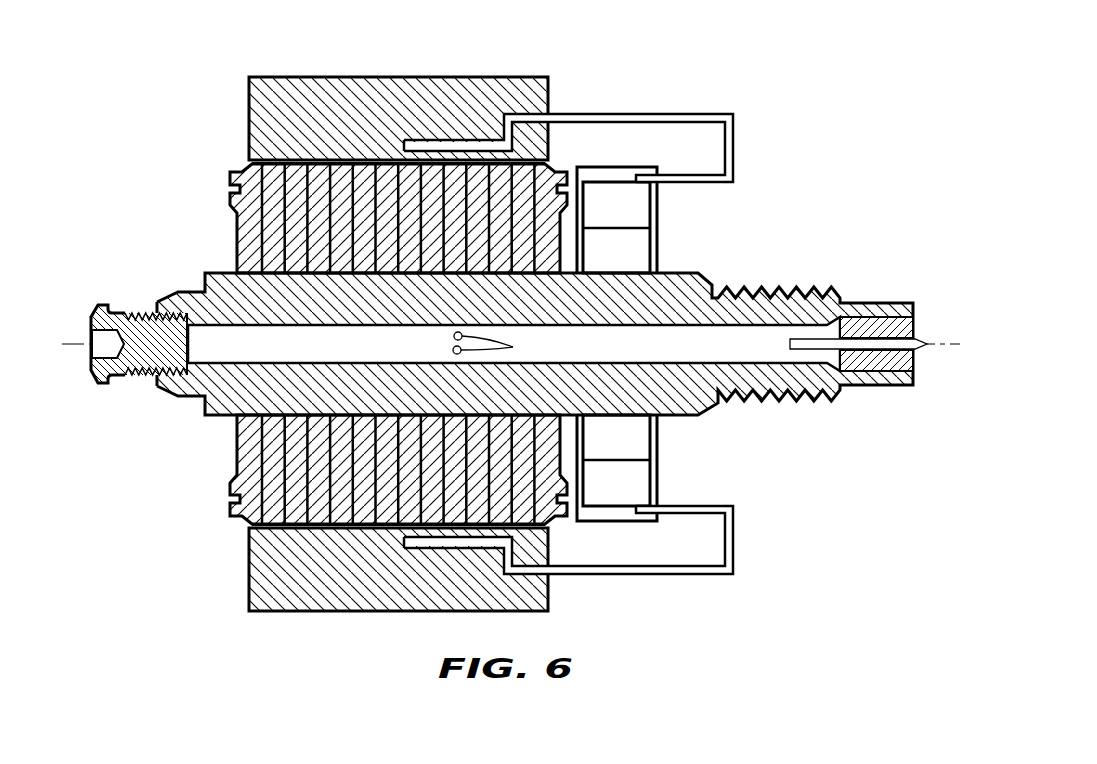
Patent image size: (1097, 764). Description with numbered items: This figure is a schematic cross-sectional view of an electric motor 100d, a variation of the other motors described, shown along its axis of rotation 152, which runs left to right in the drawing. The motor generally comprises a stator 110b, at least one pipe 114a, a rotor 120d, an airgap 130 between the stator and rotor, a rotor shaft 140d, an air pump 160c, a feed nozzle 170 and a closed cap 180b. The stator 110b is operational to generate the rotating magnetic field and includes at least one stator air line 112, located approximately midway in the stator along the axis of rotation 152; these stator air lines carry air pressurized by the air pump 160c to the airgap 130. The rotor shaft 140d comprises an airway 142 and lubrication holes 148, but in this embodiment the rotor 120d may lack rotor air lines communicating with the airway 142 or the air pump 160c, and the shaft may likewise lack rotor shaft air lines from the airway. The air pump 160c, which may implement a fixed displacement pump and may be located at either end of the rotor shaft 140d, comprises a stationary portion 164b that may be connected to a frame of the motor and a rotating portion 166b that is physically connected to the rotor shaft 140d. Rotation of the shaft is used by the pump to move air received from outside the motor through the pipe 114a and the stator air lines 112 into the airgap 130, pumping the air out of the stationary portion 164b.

The electric motor 100d is at (189, 70).
The stator 110b is at (245, 124).
The stator air line 112 is at (452, 138).
The pipe 114a is at (669, 113).
The rotor 120d is at (237, 238).
The airgap 130 is at (241, 160).
The rotor shaft 140d is at (676, 272).
The airway 142 is at (278, 360).
The lubrication holes 148 is at (506, 347).
The axis of rotation 152 is at (952, 343).
The air pump 160c is at (658, 220).
The stationary portion 164b is at (642, 216).
The rotating portion 166b is at (642, 261).
The feed nozzle 170 is at (871, 372).
The closed cap 180b is at (93, 304).